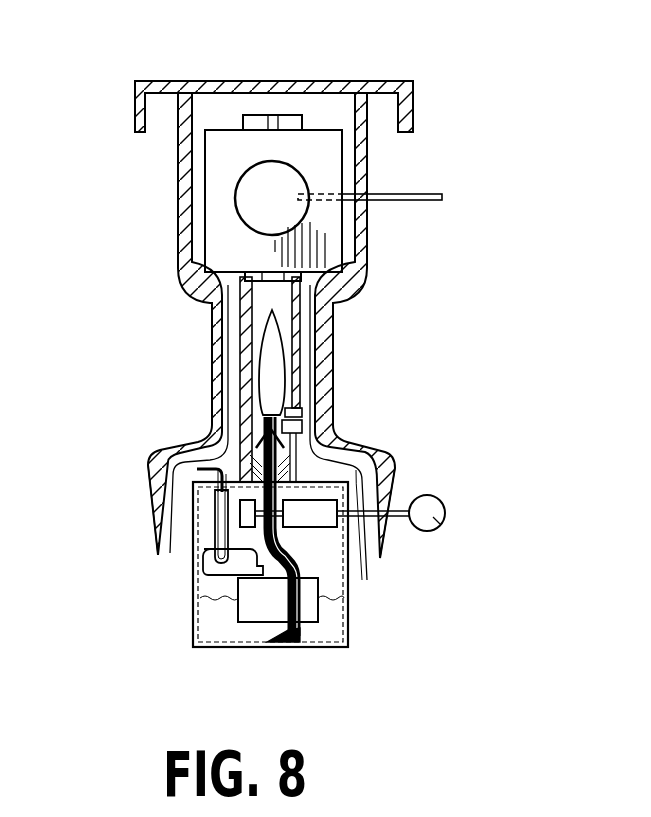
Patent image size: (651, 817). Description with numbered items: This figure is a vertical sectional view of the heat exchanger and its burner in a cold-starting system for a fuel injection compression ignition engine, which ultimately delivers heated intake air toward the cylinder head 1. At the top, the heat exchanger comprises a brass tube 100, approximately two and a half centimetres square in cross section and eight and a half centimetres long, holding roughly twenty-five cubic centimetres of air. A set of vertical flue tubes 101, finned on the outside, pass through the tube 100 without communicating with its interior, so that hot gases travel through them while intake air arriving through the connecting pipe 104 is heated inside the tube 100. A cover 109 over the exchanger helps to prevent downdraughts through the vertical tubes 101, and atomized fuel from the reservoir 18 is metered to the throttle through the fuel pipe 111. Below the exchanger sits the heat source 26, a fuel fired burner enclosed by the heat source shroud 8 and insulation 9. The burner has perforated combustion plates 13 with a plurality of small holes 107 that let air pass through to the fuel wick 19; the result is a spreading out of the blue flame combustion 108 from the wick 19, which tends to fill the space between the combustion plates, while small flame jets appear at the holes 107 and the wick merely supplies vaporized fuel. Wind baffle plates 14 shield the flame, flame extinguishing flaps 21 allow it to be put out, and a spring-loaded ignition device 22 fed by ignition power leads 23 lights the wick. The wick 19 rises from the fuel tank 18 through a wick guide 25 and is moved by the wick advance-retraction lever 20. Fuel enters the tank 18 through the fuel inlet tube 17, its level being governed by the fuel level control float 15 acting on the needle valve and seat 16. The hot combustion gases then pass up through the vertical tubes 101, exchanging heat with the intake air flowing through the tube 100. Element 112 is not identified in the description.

The cylinder head 1 is at (443, 112).
The heat source shroud 8 is at (163, 553).
The insulation 9 is at (367, 293).
The perforated combustion plates 13 is at (273, 340).
The wind baffle plates 14 is at (382, 560).
The fuel level control float 15 is at (257, 610).
The needle valve and seat 16 is at (220, 533).
The fuel inlet tube 17 is at (197, 470).
The fuel tank 18 is at (193, 622).
The fuel wick 19 is at (300, 470).
The wick advance-retraction lever 20 is at (445, 522).
The flame extinguishing flaps 21 is at (263, 437).
The spring-loaded ignition device 22 is at (302, 423).
The ignition power leads 23 is at (366, 588).
The wick guide 25 is at (305, 478).
The heat source 26 is at (312, 372).
The brass tube 100 is at (323, 167).
The vertical flue tubes 101 is at (288, 113).
The connecting pipe 104 is at (240, 187).
The small holes 107 is at (242, 360).
The blue flame combustion 108 is at (302, 345).
The cover 109 is at (218, 81).
The fuel pipe 111 is at (442, 197).
The neck wall 112 is at (333, 345).